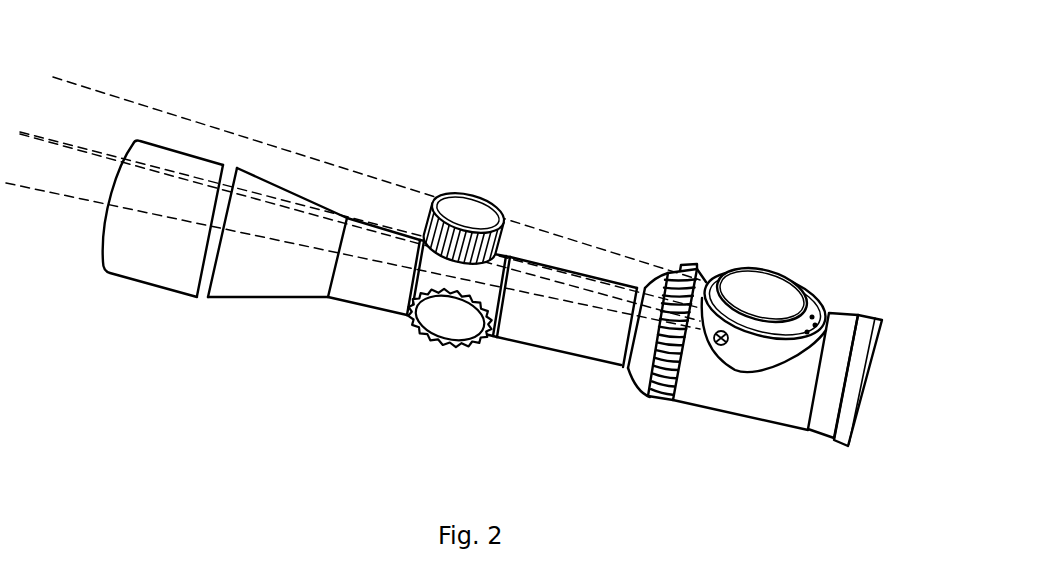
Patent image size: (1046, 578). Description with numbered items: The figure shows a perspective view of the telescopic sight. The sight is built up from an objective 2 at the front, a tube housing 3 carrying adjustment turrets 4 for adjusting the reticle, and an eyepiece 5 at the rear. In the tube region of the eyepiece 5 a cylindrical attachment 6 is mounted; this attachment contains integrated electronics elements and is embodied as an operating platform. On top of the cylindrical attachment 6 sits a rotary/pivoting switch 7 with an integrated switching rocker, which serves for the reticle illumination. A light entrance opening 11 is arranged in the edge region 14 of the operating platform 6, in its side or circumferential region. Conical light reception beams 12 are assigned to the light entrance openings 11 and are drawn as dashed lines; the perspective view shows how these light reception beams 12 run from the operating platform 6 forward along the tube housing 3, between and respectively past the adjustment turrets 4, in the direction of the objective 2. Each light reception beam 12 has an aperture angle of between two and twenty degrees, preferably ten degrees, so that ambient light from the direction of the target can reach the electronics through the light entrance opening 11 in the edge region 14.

The objective 2 is at (198, 150).
The tube housing 3 is at (544, 324).
The adjustment turrets 4 is at (466, 205).
The eyepiece 5 is at (822, 281).
The cylindrical attachment 6 is at (717, 275).
The rotary/pivoting switch 7 is at (761, 290).
The light entrance opening 11 is at (726, 344).
The light reception beams 12 is at (307, 173).
The edge region 14 is at (746, 355).